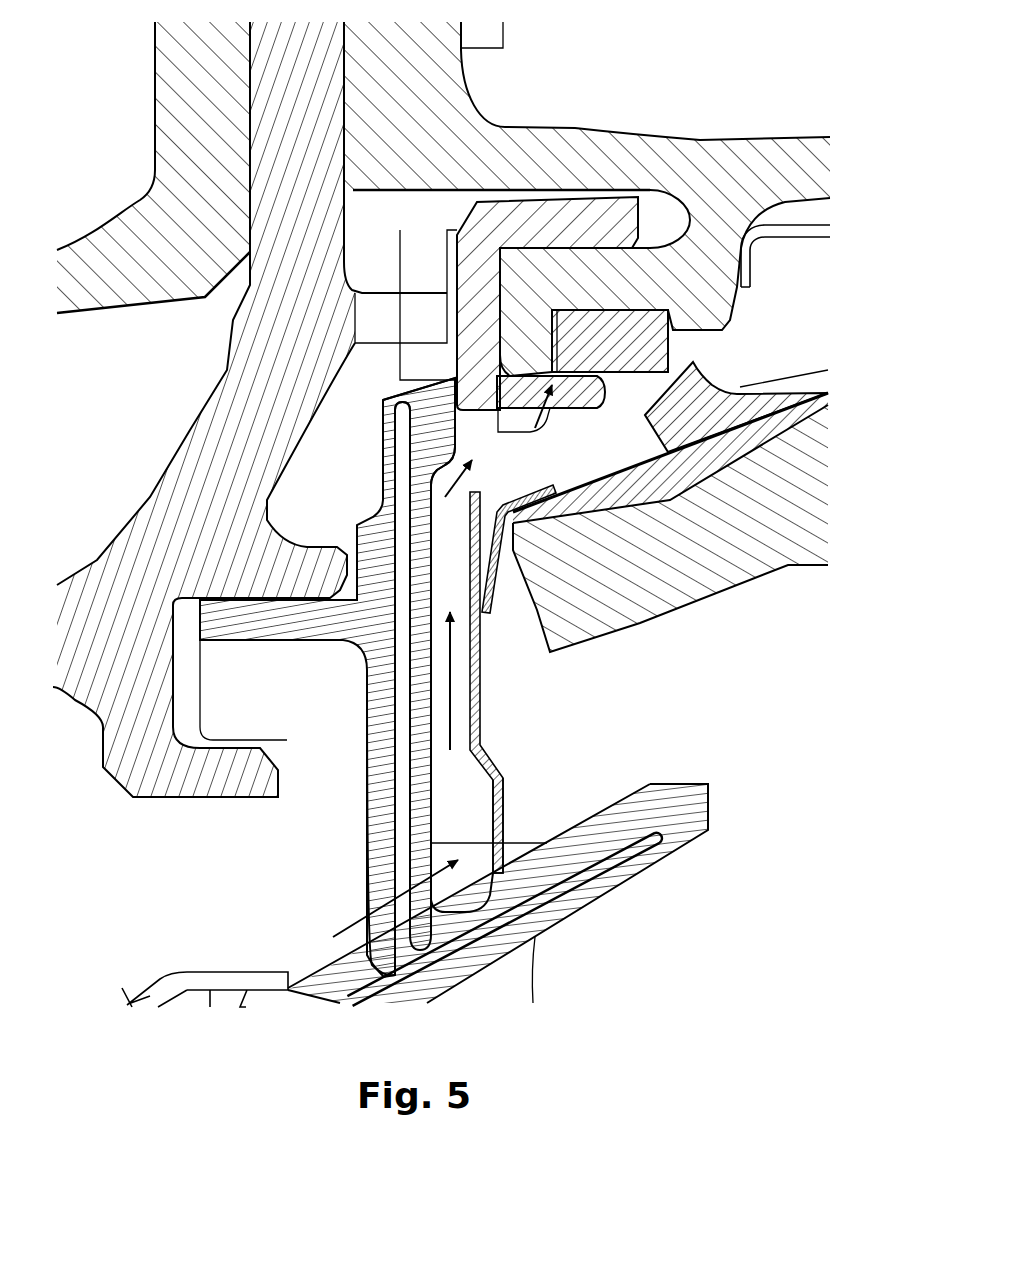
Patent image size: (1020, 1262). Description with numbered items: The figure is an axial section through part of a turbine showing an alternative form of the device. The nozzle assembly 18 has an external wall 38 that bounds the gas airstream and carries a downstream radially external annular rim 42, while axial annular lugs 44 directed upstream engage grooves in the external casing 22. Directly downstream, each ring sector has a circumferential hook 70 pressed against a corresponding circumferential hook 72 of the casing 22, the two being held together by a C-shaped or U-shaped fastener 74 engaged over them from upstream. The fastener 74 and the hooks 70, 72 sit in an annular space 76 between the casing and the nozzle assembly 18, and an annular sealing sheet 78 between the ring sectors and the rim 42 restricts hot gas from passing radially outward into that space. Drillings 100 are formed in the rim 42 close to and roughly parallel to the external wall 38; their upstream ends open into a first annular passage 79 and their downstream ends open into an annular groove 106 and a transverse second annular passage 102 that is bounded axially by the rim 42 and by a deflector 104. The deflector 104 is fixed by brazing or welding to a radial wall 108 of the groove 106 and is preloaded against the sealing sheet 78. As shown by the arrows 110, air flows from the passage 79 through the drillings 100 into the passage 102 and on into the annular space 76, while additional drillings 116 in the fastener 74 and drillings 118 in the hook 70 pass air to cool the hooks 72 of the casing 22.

The nozzle assembly 18 is at (543, 985).
The external casing 22 is at (160, 500).
The external wall 38 is at (708, 832).
The downstream annular rim 42 is at (383, 828).
The axial annular lugs 44 is at (310, 740).
The circumferential hook of ring sector 70 is at (745, 263).
The circumferential hook of casing 72 is at (650, 308).
The fastener 74 is at (472, 208).
The annular space 76 is at (495, 485).
The annular sealing sheet 78 is at (497, 638).
The first annular passage 79 is at (164, 883).
The drillings 100 is at (395, 885).
The second annular passage 102 is at (462, 805).
The deflector 104 is at (490, 755).
The annular groove 106 is at (470, 905).
The radial wall 108 is at (480, 832).
The arrows 110 is at (440, 462).
The drillings of fastener 116 is at (567, 397).
The drillings of hook 118 is at (627, 395).